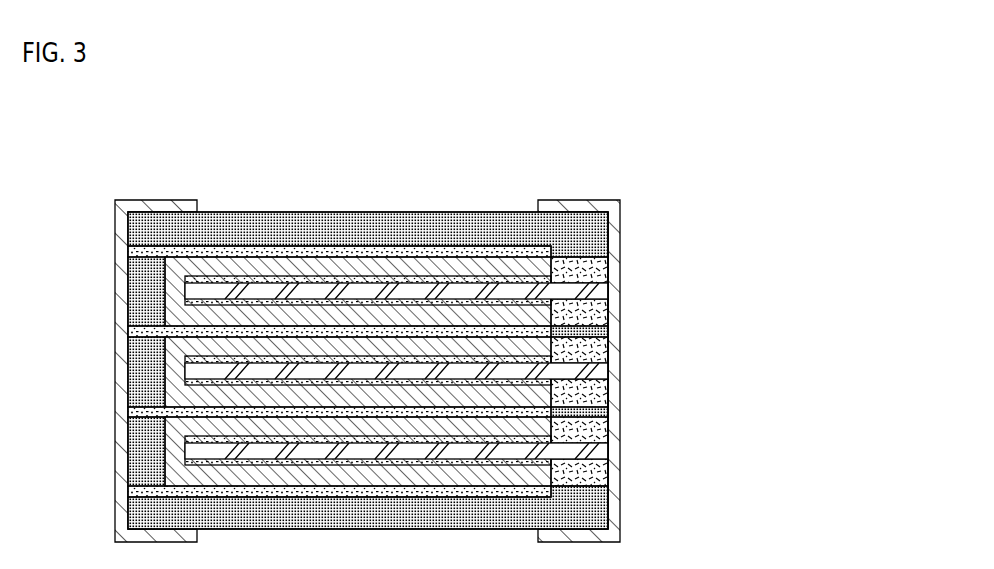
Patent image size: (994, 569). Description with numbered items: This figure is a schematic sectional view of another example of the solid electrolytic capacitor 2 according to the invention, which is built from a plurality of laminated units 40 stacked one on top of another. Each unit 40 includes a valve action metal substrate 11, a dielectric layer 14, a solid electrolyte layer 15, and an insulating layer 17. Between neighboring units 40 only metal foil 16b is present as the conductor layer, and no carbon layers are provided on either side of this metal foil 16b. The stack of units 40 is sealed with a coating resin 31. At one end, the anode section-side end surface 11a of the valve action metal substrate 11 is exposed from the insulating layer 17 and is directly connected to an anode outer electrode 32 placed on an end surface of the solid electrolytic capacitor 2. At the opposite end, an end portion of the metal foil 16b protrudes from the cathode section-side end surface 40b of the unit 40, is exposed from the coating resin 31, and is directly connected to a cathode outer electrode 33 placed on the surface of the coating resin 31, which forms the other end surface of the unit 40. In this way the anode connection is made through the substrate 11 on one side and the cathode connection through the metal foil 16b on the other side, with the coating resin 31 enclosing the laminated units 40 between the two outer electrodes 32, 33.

The solid electrolytic capacitor 2 is at (661, 179).
The valve action metal substrate 11 is at (612, 292).
The anode section-side end surface 11a is at (609, 372).
The dielectric layer 14 is at (384, 280).
The solid electrolyte layer 15 is at (300, 268).
The metal foil 16b is at (158, 254).
The insulating layer 17 is at (580, 262).
The coating resin 31 is at (514, 228).
The anode outer electrode 32 is at (608, 475).
The cathode outer electrode 33 is at (120, 477).
The unit 40 is at (613, 270).
The cathode section-side end surface 40b is at (165, 373).